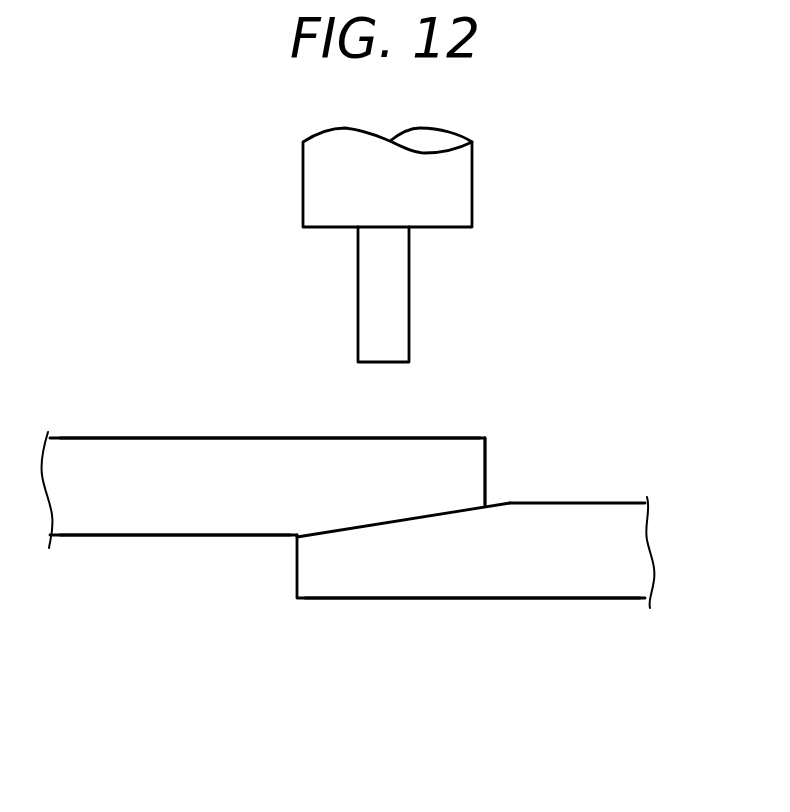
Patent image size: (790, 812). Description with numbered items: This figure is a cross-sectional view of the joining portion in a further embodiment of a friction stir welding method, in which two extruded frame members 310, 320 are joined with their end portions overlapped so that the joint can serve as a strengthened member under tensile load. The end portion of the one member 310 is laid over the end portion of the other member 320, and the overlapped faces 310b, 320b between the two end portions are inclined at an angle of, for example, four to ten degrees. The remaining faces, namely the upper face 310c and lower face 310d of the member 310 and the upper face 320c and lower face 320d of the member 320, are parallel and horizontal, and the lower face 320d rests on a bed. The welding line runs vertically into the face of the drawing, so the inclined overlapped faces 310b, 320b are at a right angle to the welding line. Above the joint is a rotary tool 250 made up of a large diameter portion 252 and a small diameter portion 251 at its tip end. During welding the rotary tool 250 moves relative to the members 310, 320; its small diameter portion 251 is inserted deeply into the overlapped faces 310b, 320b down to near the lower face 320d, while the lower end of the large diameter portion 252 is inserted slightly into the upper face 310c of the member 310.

The rotary tool 250 is at (375, 245).
The small diameter portion 251 is at (410, 282).
The large diameter portion 252 is at (473, 187).
The member 310 is at (275, 505).
The overlapped face 310b is at (370, 526).
The upper face 310c is at (231, 438).
The lower face 310d is at (141, 535).
The member 320 is at (498, 527).
The overlapped face 320b is at (465, 506).
The upper face 320c is at (605, 503).
The lower face 320d is at (492, 600).